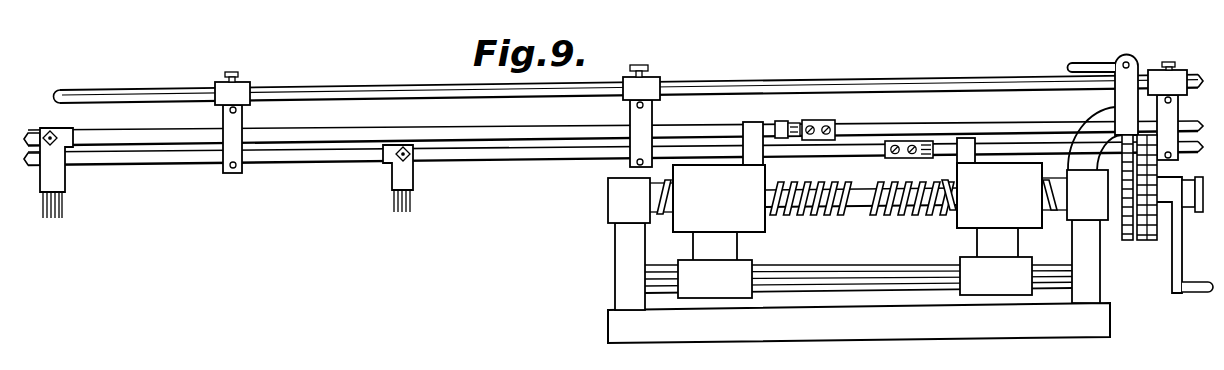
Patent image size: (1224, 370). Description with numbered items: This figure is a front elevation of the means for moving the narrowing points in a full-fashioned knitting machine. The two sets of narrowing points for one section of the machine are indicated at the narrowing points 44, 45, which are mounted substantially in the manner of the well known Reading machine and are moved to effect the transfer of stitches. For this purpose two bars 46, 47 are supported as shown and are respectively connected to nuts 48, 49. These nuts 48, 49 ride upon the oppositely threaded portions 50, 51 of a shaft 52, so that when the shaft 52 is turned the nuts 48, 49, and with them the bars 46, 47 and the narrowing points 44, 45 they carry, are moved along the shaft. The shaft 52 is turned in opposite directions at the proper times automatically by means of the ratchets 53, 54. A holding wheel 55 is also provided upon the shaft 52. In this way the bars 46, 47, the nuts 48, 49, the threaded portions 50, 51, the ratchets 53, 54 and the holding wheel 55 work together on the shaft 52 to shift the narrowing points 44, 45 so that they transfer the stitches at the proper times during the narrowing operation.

The narrowing point 44 is at (63, 200).
The narrowing point 45 is at (415, 193).
The bar 46 is at (330, 153).
The bar 47 is at (315, 133).
The nut 48 is at (999, 216).
The nut 49 is at (719, 210).
The threaded portion 50 is at (915, 202).
The threaded portion 51 is at (817, 212).
The shaft 52 is at (863, 198).
The ratchet 53 is at (1138, 237).
The ratchet 54 is at (1150, 237).
The holding wheel 55 is at (1127, 242).